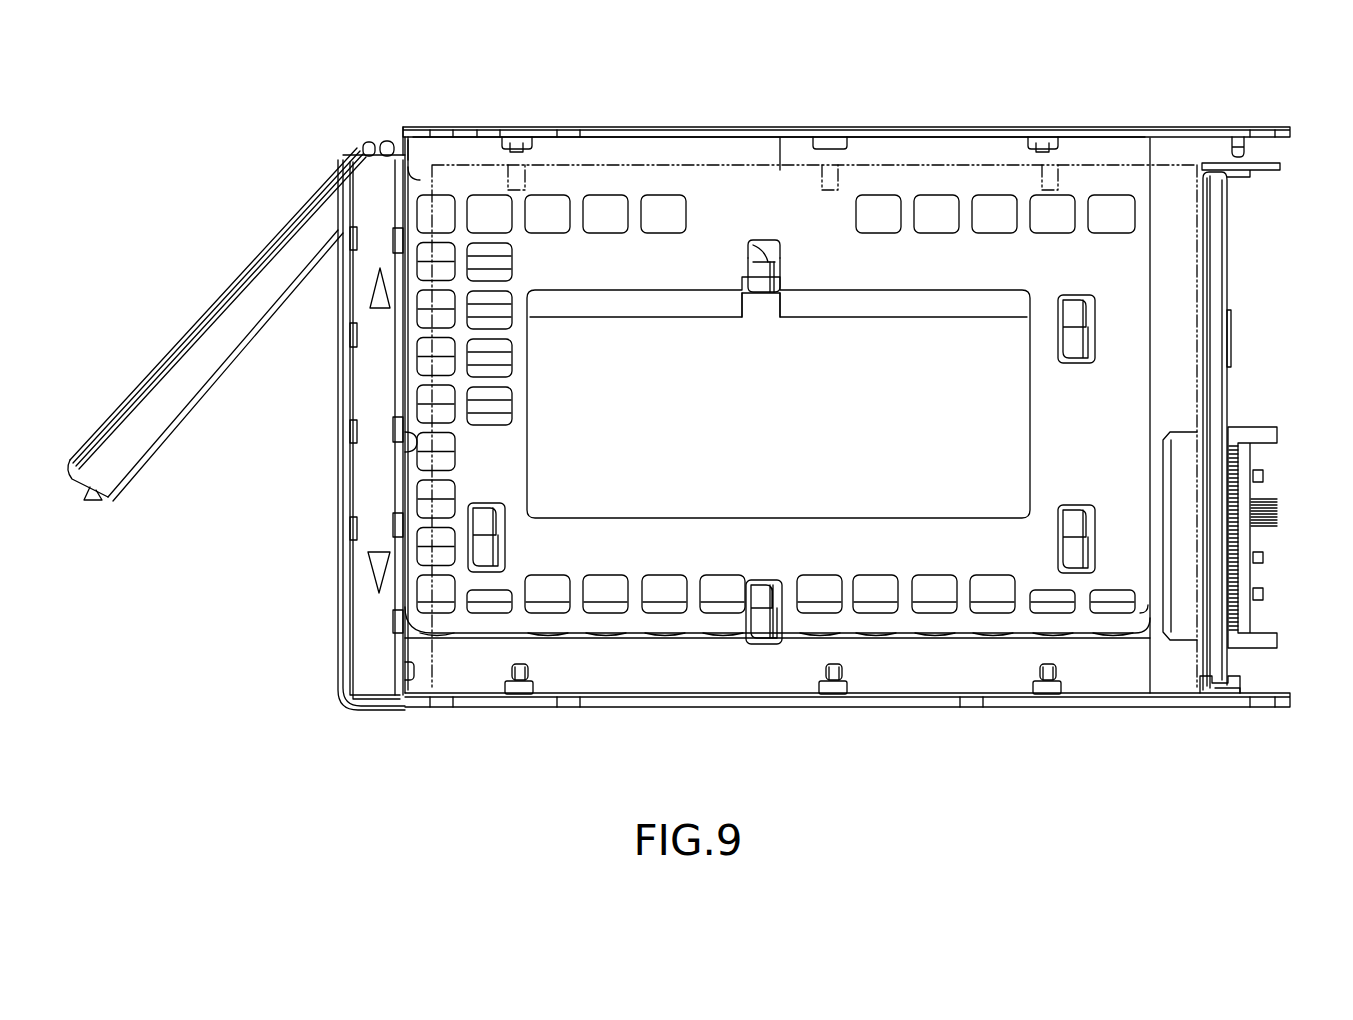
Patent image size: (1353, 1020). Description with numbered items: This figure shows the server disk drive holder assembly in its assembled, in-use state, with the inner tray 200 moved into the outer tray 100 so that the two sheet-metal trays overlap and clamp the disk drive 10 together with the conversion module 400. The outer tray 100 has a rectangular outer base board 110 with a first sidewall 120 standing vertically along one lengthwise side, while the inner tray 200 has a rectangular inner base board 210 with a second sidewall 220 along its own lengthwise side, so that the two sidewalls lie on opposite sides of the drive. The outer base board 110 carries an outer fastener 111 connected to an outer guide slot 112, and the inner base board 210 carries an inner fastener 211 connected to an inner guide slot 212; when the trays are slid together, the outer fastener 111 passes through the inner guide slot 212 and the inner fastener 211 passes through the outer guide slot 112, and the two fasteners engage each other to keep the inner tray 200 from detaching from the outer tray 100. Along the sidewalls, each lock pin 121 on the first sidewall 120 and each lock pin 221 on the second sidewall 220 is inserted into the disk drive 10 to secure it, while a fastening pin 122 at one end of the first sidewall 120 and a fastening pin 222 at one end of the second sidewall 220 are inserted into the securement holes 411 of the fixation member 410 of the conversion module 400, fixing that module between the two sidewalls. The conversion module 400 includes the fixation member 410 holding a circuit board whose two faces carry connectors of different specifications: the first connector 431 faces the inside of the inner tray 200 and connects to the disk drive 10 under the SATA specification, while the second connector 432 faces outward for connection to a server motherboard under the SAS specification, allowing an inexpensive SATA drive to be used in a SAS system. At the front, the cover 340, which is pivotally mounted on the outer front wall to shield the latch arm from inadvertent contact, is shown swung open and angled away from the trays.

The disk drive 10 is at (1112, 165).
The outer tray 100 is at (909, 712).
The outer base board 110 is at (810, 693).
The outer fastener 111 is at (760, 282).
The outer guide slot 112 is at (763, 309).
The first sidewall 120 is at (725, 708).
The lock pin 121 is at (510, 683).
The fastening pin 122 is at (1240, 680).
The inner tray 200 is at (880, 123).
The inner base board 210 is at (780, 160).
The inner fastener 211 is at (764, 257).
The inner guide slot 212 is at (757, 240).
The second sidewall 220 is at (698, 130).
The lock pin 221 is at (515, 137).
The fastening pin 222 is at (1237, 137).
The cover 340 is at (190, 342).
The conversion module 400 is at (1237, 372).
The fixation member 410 is at (1215, 282).
The securement hole 411 is at (1240, 178).
The first connector 431 is at (1185, 620).
The second connector 432 is at (1270, 480).